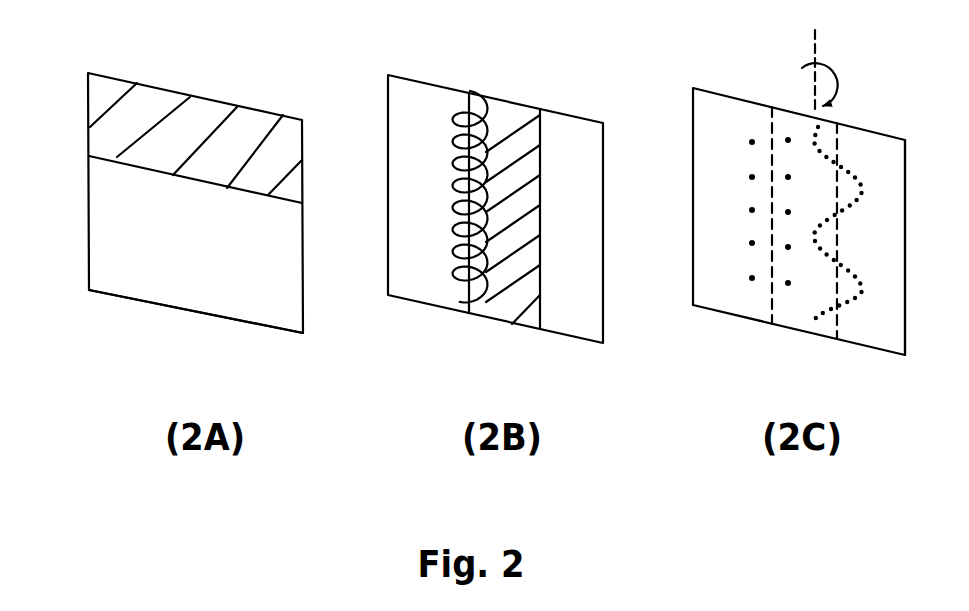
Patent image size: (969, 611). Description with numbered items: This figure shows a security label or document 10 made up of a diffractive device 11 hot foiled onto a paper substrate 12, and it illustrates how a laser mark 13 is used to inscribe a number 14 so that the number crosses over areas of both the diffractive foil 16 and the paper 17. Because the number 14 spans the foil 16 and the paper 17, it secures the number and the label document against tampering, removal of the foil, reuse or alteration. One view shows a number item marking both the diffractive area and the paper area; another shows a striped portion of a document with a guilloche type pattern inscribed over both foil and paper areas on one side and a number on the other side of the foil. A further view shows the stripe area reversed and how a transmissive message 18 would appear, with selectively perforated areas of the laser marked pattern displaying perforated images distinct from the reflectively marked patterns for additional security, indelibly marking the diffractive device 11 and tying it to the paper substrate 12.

The security label or document 10 is at (102, 298).
The diffractive device 11 is at (106, 98).
The paper substrate 12 is at (275, 311).
The laser mark 13 is at (132, 170).
The number 14 is at (271, 156).
The diffractive foil 16 is at (284, 187).
The paper 17 is at (278, 224).
The transmissive message 18 is at (811, 329).